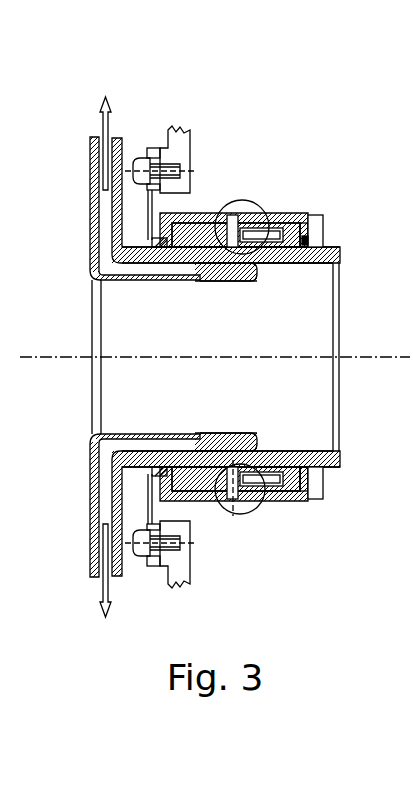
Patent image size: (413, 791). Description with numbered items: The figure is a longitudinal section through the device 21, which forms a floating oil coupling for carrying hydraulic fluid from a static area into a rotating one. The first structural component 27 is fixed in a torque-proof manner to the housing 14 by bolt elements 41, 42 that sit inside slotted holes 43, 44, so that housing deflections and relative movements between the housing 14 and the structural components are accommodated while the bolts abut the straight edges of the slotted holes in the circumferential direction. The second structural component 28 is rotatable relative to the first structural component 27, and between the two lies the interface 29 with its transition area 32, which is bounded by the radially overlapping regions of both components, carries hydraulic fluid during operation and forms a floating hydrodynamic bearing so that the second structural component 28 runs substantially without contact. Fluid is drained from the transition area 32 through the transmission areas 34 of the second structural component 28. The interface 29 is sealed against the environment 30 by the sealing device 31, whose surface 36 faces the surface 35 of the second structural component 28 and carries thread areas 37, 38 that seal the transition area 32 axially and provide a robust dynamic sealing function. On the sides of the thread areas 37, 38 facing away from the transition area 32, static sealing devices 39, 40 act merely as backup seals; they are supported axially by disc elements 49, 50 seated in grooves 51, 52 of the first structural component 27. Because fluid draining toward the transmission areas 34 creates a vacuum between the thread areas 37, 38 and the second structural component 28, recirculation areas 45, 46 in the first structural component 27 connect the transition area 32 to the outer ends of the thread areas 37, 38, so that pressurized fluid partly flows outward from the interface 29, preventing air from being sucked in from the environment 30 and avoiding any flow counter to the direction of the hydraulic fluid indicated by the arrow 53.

The housing 14 is at (182, 134).
The device 21 is at (245, 98).
The first structural component 27 is at (304, 212).
The second structural component 28 is at (88, 160).
The interface 29 is at (241, 199).
The environment 30 is at (258, 130).
The sealing device 31 is at (285, 265).
The transition area 32 is at (230, 215).
The transmission areas 34 is at (268, 266).
The surface 35 is at (285, 215).
The surface 36 is at (183, 265).
The thread area 37 is at (215, 281).
The thread area 38 is at (270, 268).
The static sealing device 39 is at (158, 242).
The static sealing device 40 is at (325, 237).
The bolt element 41 is at (138, 150).
The bolt element 42 is at (145, 558).
The slotted hole 43 is at (155, 147).
The slotted hole 44 is at (158, 570).
The recirculation area 45 is at (198, 503).
The recirculation area 46 is at (270, 503).
The disc element 49 is at (155, 204).
The disc element 50 is at (320, 215).
The groove 51 is at (165, 268).
The groove 52 is at (302, 452).
The arrow 53 is at (257, 222).